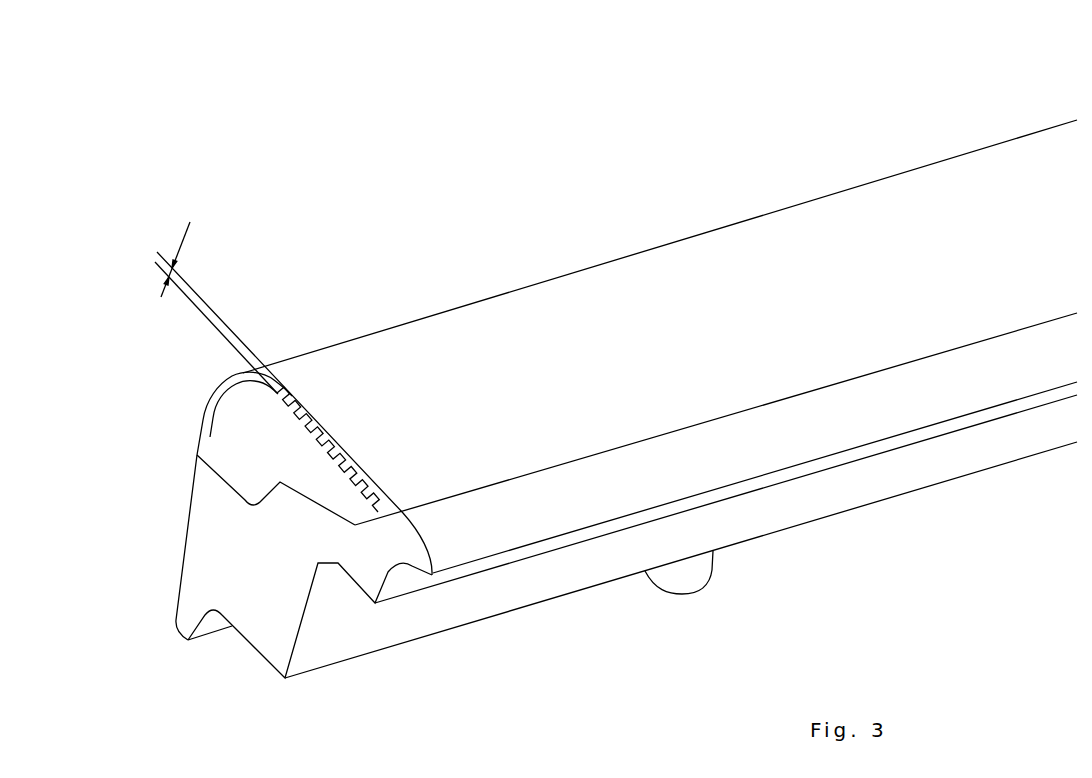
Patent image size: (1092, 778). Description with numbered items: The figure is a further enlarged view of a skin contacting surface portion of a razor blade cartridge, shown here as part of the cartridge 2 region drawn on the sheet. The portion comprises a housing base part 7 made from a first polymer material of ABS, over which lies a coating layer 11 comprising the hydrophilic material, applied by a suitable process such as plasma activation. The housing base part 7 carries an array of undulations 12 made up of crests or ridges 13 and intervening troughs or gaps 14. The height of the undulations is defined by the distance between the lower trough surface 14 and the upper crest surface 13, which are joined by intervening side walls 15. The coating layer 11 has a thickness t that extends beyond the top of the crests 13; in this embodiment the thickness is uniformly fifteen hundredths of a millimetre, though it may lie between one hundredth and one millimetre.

The belt 2 is at (707, 250).
The housing base part 7 is at (868, 478).
The coating layer 11 is at (218, 396).
The undulations 12 is at (276, 392).
The crests 13 is at (305, 428).
The troughs 14 is at (305, 428).
The side walls 15 is at (305, 428).
The coating thickness t is at (175, 249).